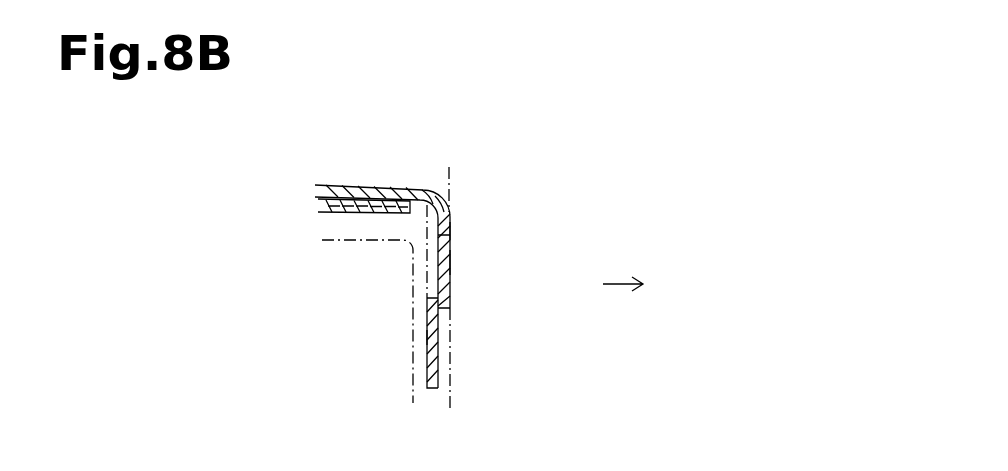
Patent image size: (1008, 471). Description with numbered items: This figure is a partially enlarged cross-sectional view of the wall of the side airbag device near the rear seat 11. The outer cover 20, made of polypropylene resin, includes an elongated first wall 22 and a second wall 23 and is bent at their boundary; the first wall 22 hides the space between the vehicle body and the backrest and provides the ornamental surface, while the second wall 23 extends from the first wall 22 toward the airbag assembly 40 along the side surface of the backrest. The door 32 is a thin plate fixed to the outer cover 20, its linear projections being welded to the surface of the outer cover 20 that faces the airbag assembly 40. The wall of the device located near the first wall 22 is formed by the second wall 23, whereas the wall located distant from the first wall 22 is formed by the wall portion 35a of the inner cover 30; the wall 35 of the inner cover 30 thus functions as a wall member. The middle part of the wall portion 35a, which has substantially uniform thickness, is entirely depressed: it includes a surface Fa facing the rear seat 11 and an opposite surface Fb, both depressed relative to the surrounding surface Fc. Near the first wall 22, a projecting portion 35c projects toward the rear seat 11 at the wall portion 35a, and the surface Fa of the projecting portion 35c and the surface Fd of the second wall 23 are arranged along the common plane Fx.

The outer cover 20 is at (441, 263).
The first wall 22 is at (390, 186).
The second wall 23 is at (453, 218).
The inner cover 30 is at (317, 219).
The door 32 is at (345, 213).
The wall 35 is at (504, 301).
The projecting portion 35c is at (450, 300).
The wall portion 35a is at (438, 348).
The airbag assembly 40 is at (412, 392).
The rear seat 11 is at (716, 286).
The surface Fa is at (452, 262).
The opposite surface Fb is at (436, 282).
The surrounding surface Fc is at (427, 336).
The surface Fd is at (452, 232).
The plane Fx is at (453, 390).